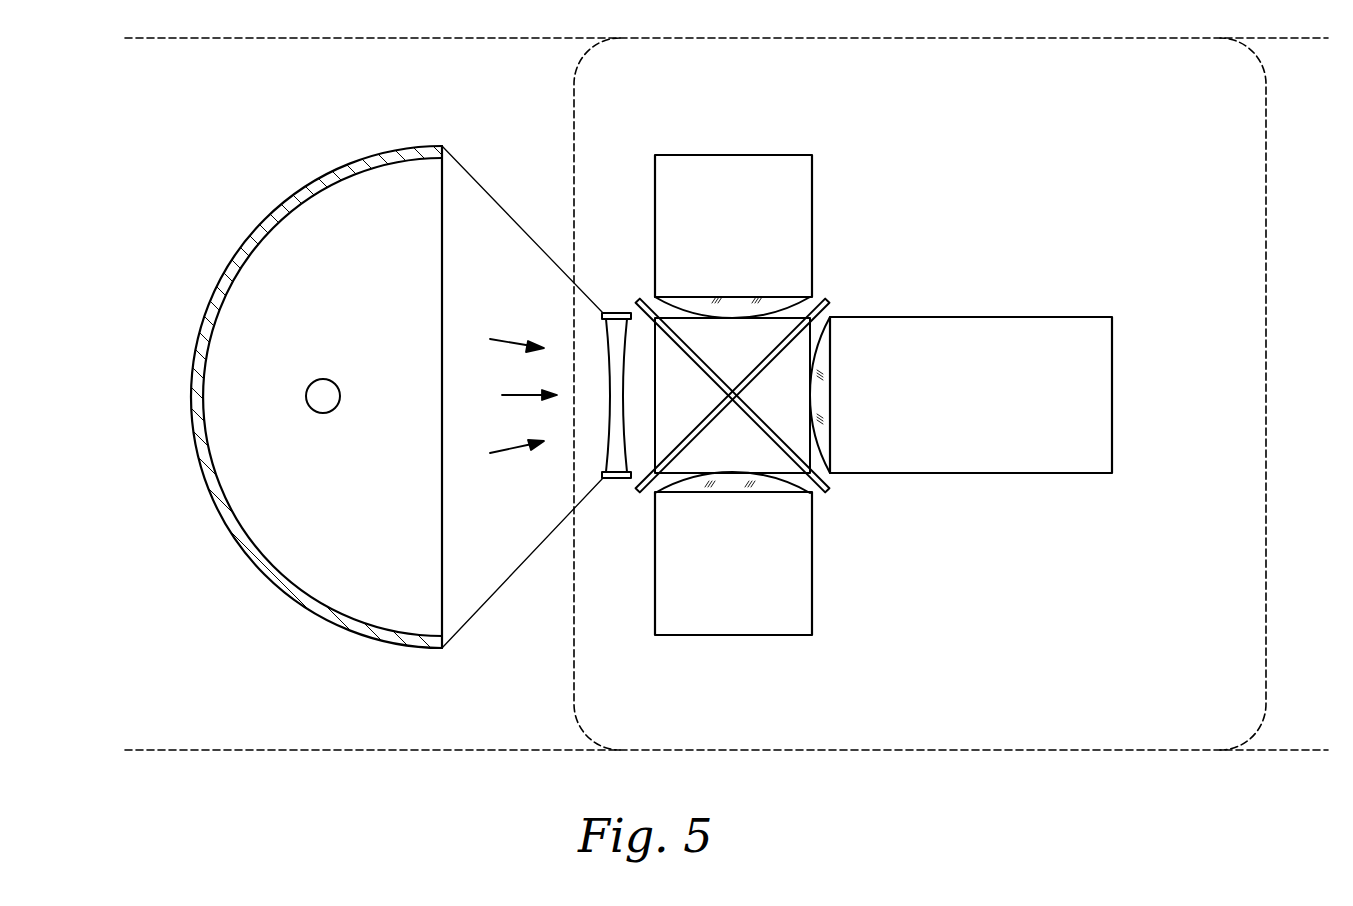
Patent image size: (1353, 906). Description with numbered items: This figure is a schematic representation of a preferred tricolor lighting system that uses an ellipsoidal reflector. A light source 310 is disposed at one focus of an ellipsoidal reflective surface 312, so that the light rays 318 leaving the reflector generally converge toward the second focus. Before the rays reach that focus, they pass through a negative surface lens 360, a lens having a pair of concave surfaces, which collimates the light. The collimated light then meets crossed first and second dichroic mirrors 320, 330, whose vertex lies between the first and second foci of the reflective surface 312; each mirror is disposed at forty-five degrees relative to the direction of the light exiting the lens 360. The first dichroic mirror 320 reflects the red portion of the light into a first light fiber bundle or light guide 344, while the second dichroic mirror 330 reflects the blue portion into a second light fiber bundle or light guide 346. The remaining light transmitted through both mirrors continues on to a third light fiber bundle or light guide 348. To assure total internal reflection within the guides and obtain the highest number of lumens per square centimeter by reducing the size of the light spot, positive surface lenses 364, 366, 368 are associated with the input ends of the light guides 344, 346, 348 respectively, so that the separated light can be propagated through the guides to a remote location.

The light source 310 is at (325, 397).
The ellipsoidal reflective surface 312 is at (297, 202).
The light rays 318 is at (522, 395).
The first dichroic mirror 320 is at (765, 338).
The second dichroic mirror 330 is at (762, 450).
The first light fiber bundle or light guide 344 is at (793, 210).
The second light fiber bundle or light guide 346 is at (795, 618).
The third light fiber bundle or light guide 348 is at (1112, 395).
The negative surface lens 360 is at (614, 313).
The positive surface lens 364 is at (740, 310).
The positive surface lens 366 is at (732, 488).
The positive surface lens 368 is at (818, 398).